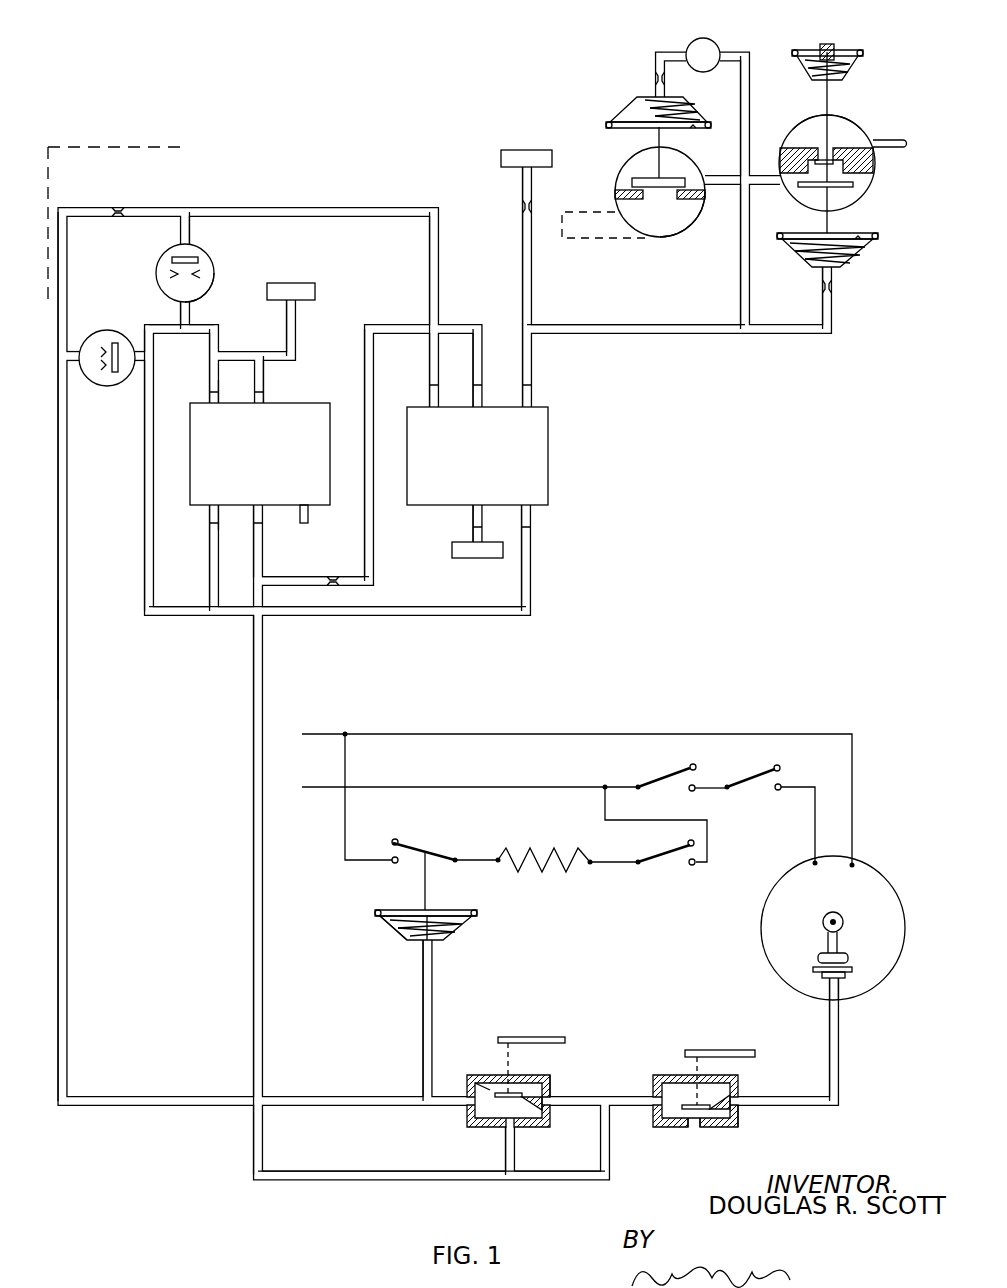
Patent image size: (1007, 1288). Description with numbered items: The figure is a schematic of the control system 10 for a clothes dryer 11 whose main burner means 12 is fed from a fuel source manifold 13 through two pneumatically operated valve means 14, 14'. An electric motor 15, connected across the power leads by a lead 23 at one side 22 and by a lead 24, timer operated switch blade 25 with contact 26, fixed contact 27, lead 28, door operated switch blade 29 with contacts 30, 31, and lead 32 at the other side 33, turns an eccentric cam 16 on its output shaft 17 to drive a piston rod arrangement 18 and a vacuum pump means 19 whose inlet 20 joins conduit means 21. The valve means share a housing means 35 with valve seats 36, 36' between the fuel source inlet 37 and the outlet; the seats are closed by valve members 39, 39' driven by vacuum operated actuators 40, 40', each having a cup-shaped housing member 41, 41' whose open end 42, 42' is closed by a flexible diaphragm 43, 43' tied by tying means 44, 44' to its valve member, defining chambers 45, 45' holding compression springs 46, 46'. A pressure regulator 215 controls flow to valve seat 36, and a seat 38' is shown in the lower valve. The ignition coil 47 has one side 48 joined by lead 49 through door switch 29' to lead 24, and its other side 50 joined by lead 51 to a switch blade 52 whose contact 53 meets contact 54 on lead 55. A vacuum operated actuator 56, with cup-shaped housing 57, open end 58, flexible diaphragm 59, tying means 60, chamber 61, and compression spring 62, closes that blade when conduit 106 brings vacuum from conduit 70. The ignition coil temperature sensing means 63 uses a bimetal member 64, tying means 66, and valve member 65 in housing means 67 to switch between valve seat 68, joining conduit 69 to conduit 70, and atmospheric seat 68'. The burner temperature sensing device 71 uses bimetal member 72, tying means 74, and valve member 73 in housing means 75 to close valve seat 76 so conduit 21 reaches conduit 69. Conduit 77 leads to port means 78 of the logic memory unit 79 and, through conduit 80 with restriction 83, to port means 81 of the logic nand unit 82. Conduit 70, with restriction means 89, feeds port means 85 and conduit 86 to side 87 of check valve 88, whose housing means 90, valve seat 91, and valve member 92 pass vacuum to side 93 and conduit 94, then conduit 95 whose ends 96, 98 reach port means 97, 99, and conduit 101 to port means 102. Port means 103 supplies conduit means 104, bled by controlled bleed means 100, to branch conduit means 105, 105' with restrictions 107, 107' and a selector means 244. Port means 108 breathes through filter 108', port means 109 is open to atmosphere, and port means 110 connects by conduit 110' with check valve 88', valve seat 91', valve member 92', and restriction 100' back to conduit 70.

The control system 10 is at (720, 470).
The clothes dryer 11 is at (122, 143).
The main burner means 12 is at (585, 240).
The fuel source manifold 13 is at (895, 139).
The pneumatically operated valve means 14 is at (849, 163).
The pneumatically operated valve means 14' is at (677, 199).
The electric motor 15 is at (762, 940).
The eccentric cam 16 is at (841, 916).
The output shaft 17 is at (823, 925).
The piston rod arrangement 18 is at (839, 945).
The vacuum pump means 19 is at (852, 962).
The inlet 20 is at (841, 980).
The conduit means 21 is at (839, 1048).
The one side of the electric motor 22 is at (856, 863).
The lead 23 is at (530, 734).
The lead 24 is at (500, 787).
The timer operated switch blade 25 is at (645, 781).
The contact 26 is at (697, 767).
The fixed contact 27 is at (690, 790).
The lead 28 is at (710, 792).
The dryer door operated switch blade 29 is at (756, 764).
The door operated switch 29' is at (654, 844).
The contact 30 is at (782, 767).
The contact 31 is at (784, 787).
The lead 32 is at (815, 818).
The other side of the electric motor 33 is at (812, 862).
The housing means 35 is at (800, 118).
The valve seat 36 is at (850, 164).
The valve seat 36' is at (677, 231).
The fuel source inlet 37 is at (877, 135).
The valve seat 38' is at (629, 193).
The valve member 39 is at (848, 139).
The valve member 39' is at (686, 168).
The vacuum operated actuator 40 is at (818, 270).
The vacuum operated actuator 40' is at (641, 95).
The cup-shaped housing member 41 is at (846, 263).
The cup-shaped housing member 41' is at (621, 108).
The open end 42 is at (886, 235).
The open end 42' is at (632, 138).
The flexible diaphragm 43 is at (817, 224).
The flexible diaphragm 43' is at (706, 139).
The tying means 44 is at (790, 210).
The tying means 44' is at (615, 152).
The chamber 45 is at (850, 281).
The chamber 45' is at (698, 110).
The compression spring 46 is at (809, 257).
The compression spring 46' is at (692, 96).
The ignition coil 47 is at (548, 850).
The one side of the ignition coil 48 is at (590, 866).
The lead 49 is at (630, 864).
The other side of the ignition coil 50 is at (500, 855).
The lead 51 is at (455, 856).
The switch blade 52 is at (428, 848).
The contact 53 is at (394, 838).
The contact 54 is at (394, 864).
The lead 55 is at (345, 834).
The vacuum operated actuator 56 is at (449, 944).
The cup-shaped housing 57 is at (395, 926).
The open end 58 is at (472, 913).
The flexible diaphragm 59 is at (432, 912).
The tying means 60 is at (424, 885).
The chamber 61 is at (452, 930).
The compression spring 62 is at (405, 940).
The ignition coil temperature sensing means 63 is at (575, 1074).
The bimetal member 64 is at (532, 1037).
The valve member 65 is at (526, 1112).
The tying means 66 is at (512, 1062).
The housing means 67 is at (551, 1097).
The valve seat 68 is at (479, 1146).
The valve seat 68' is at (464, 1061).
The conduit 69 is at (555, 1181).
The conduit 70 is at (320, 1097).
The temperature sensing device 71 is at (695, 1036).
The bimetal member 72 is at (727, 1050).
The valve member 73 is at (707, 1103).
The tying means 74 is at (692, 1076).
The housing means 75 is at (722, 1126).
The valve seat 76 is at (672, 1121).
The conduit 77 is at (254, 975).
The port means 78 is at (262, 515).
The logic memory unit 79 is at (334, 387).
The conduit 80 is at (373, 553).
The port means 81 is at (482, 395).
The logic nand unit 82 is at (551, 465).
The restriction 83 is at (340, 582).
The port means 85 is at (430, 390).
The conduit 86 is at (192, 226).
The one side of the check valve 87 is at (192, 240).
The check valve 88 is at (154, 270).
The one-way check valve 88' is at (107, 378).
The restriction means 89 is at (118, 205).
The housing means 90 is at (212, 283).
The valve seat 91 is at (152, 277).
The valve seat 91' is at (86, 334).
The valve member 92 is at (165, 240).
The valve member 92' is at (94, 322).
The other side of the check valve 93 is at (196, 303).
The conduit 94 is at (180, 316).
The conduit 95 is at (145, 470).
The one end of conduit 95 96 is at (210, 375).
The port means 97 is at (210, 392).
The other end of conduit 95 98 is at (210, 550).
The port means 99 is at (210, 515).
The controlled bleed means 100 is at (503, 181).
The restriction 100' is at (318, 319).
The conduit 101 is at (370, 615).
The port means 102 is at (531, 516).
The port means 103 is at (531, 392).
The conduit means 104 is at (640, 337).
The branch conduit means 105 is at (860, 303).
The branch conduit means 105' is at (706, 192).
The conduit 106 is at (423, 1010).
The restriction 107 is at (798, 301).
The restriction 107' is at (621, 63).
The port means 108 is at (440, 523).
The filter 108' is at (470, 567).
The port means 109 is at (309, 515).
The port means 110 is at (289, 393).
The conduit 110' is at (300, 370).
The pressure regulator 215 is at (848, 46).
The selector means 244 is at (718, 44).